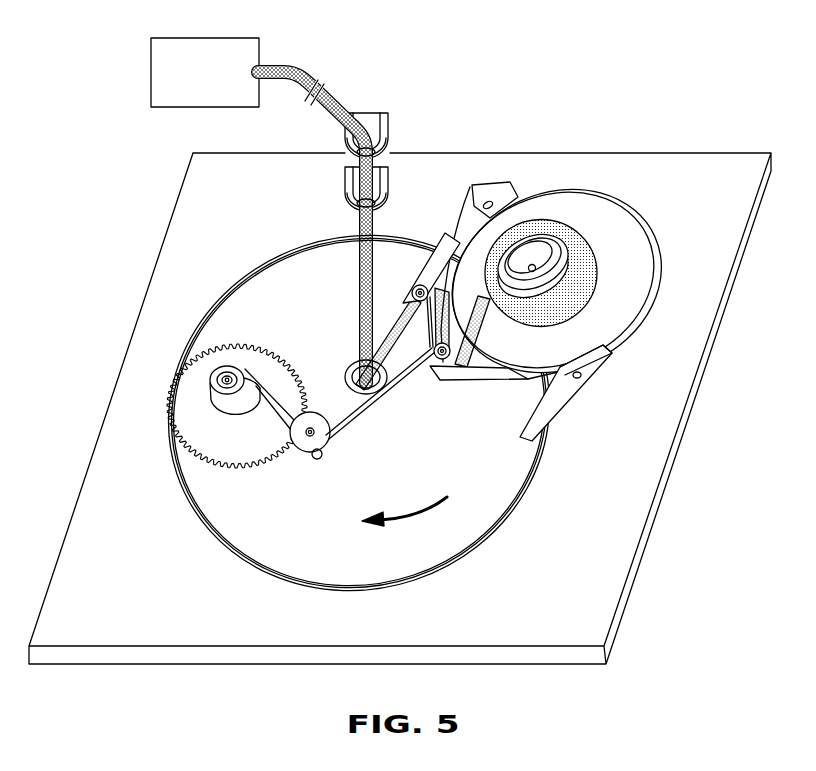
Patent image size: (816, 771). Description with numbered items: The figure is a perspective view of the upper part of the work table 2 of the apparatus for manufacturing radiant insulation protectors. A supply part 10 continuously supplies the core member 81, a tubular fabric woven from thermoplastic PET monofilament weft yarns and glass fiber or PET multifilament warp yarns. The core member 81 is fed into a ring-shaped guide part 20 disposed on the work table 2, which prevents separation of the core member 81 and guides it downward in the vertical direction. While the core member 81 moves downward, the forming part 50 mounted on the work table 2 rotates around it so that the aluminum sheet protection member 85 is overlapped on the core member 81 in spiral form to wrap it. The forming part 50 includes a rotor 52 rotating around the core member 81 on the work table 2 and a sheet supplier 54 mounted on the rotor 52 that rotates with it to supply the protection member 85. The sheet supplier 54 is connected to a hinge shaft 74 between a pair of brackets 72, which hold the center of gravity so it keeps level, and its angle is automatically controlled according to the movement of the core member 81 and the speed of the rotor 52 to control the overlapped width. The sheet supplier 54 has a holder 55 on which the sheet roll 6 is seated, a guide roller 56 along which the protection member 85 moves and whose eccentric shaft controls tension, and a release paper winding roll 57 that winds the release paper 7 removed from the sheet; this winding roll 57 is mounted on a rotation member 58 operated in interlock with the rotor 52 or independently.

The work table 2 is at (202, 192).
The supply part 10 is at (205, 72).
The core member 81 is at (343, 100).
The guide part 20 is at (398, 131).
The forming part 50 is at (601, 246).
The holder 55 is at (621, 227).
The sheet roll 6 is at (583, 258).
The sheet supplier 54 is at (650, 308).
The rotor 52 is at (501, 510).
The release paper winding roll 57 is at (247, 373).
The rotation member 58 is at (248, 452).
The release paper 7 is at (348, 415).
The protection member 85 is at (398, 330).
The guide roller 56 is at (446, 380).
The brackets 72 is at (557, 402).
The hinge shaft 74 is at (583, 375).